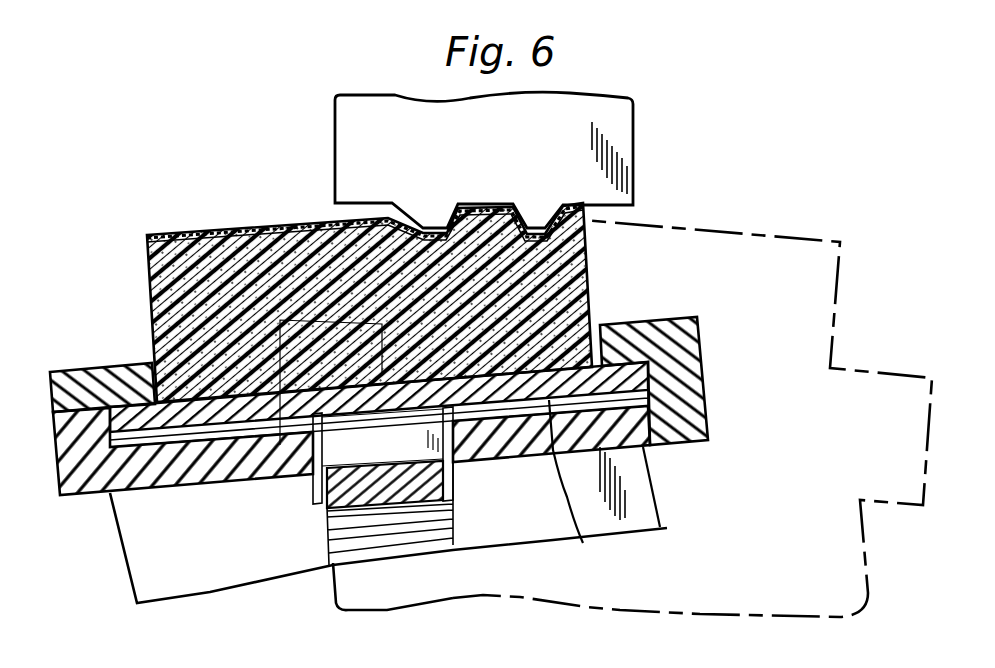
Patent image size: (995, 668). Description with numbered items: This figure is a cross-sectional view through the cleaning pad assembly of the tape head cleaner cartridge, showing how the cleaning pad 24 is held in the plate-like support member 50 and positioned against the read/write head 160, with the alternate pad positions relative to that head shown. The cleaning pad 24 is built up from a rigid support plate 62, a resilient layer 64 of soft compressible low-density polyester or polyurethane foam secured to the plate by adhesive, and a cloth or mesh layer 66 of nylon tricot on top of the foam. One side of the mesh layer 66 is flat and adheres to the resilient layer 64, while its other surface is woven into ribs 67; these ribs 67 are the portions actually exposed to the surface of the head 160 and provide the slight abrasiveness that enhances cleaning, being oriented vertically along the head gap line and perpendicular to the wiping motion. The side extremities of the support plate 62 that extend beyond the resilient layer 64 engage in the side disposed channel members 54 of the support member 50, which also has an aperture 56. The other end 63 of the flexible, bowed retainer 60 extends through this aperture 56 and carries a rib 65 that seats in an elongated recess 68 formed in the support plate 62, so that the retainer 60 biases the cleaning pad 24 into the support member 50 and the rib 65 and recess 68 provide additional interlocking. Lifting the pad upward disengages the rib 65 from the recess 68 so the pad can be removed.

The cleaning pad 24 is at (176, 216).
The support member 50 is at (711, 354).
The side disposed channel members 54 is at (115, 386).
The aperture 56 is at (468, 463).
The retainer 60 is at (322, 533).
The support plate 62 is at (711, 395).
The other end of the retainer 63 is at (448, 503).
The resilient layer 64 is at (152, 273).
The rib 65 is at (345, 420).
The mesh layer 66 is at (238, 216).
The ribs 67 is at (303, 218).
The elongated recess 68 is at (388, 501).
The forming tool 160 is at (522, 157).